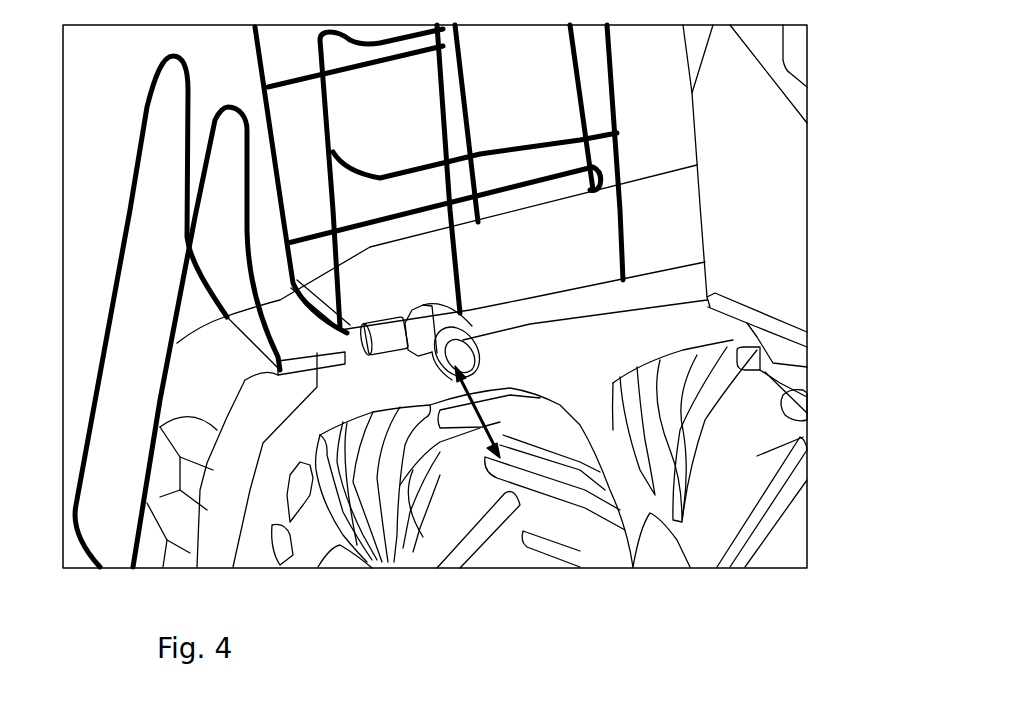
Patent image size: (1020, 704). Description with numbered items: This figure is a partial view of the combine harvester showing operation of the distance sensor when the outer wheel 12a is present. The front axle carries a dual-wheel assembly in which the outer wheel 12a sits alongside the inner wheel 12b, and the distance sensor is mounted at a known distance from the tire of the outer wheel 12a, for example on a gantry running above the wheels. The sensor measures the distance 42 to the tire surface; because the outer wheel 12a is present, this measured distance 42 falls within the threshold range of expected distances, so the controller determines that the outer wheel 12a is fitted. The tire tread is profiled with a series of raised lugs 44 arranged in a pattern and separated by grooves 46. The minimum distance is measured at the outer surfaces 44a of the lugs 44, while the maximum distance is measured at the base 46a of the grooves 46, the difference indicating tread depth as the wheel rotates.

The outer wheel 12a is at (573, 530).
The inner wheel 12b is at (773, 540).
The measured distance 42 is at (510, 420).
The lugs 44 is at (363, 552).
The grooves 46 is at (423, 537).
The outer surfaces of the lugs 44a is at (790, 405).
The base of the grooves 46a is at (752, 453).